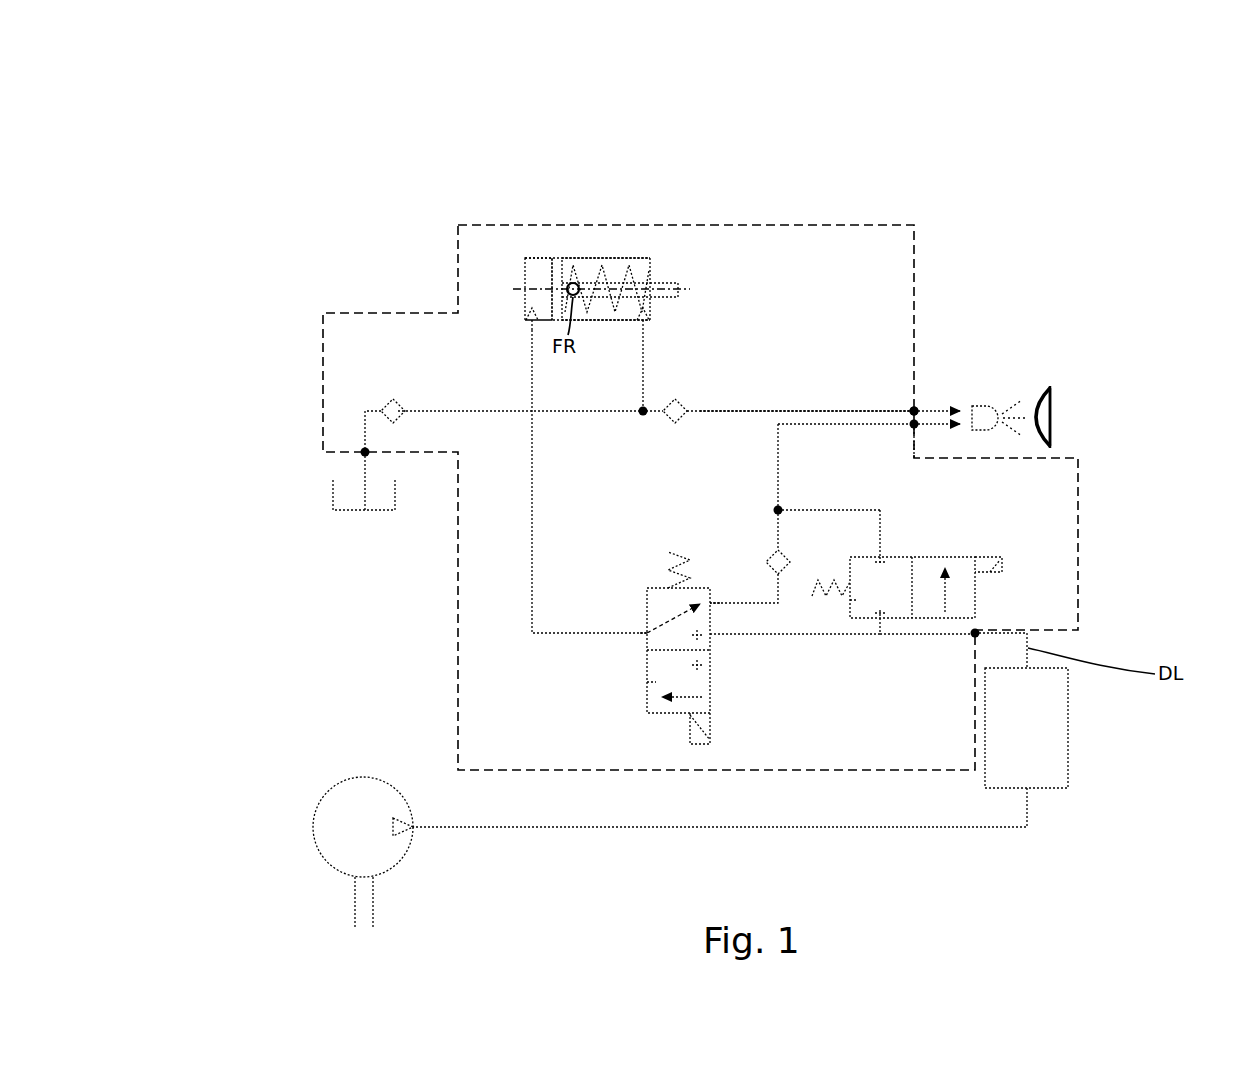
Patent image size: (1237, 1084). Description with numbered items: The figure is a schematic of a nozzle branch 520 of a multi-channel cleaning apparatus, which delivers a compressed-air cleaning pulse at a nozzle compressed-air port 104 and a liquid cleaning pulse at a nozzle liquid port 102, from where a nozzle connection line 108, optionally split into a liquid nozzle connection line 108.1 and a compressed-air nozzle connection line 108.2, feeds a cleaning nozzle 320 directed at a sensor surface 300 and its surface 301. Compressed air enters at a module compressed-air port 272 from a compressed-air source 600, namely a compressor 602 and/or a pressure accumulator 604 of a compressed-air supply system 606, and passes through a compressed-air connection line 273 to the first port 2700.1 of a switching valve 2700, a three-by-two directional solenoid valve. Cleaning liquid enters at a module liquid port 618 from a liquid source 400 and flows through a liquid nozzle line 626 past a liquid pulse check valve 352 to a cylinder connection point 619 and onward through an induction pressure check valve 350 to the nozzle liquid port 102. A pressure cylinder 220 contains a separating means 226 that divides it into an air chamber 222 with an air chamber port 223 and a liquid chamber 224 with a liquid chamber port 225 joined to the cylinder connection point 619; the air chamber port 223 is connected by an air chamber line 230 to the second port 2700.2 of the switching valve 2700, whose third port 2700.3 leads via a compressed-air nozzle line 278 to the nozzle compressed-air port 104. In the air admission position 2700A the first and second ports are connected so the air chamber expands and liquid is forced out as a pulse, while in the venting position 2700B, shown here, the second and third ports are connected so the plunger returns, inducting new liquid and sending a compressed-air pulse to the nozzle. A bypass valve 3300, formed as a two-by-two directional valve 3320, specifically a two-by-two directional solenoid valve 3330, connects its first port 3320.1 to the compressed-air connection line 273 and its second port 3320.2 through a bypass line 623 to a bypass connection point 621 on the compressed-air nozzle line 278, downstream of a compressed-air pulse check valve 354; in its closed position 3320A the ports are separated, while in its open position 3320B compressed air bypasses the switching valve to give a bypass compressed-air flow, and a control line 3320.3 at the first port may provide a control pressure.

The nozzle liquid port 102 is at (912, 407).
The nozzle compressed-air port 104 is at (913, 423).
The nozzle connection line 108 is at (932, 404).
The liquid nozzle connection line 108.1 is at (915, 408).
The compressed-air nozzle connection line 108.2 is at (950, 422).
The pressure cylinder 220 is at (547, 180).
The air chamber 222 is at (535, 265).
The air chamber port 223 is at (532, 324).
The liquid chamber 224 is at (561, 180).
The liquid chamber port 225 is at (643, 324).
The separating means 226 is at (555, 265).
The air chamber line 230 is at (531, 482).
The module compressed-air port 272 is at (978, 634).
The compressed-air connection line 273 is at (930, 635).
The compressed-air nozzle line 278 is at (864, 423).
The sensor surface 300 is at (1040, 393).
The windshield surface 301 is at (1052, 432).
The cleaning nozzle 320 is at (985, 405).
The induction pressure check valve 350 is at (681, 402).
The liquid pulse check valve 352 is at (398, 401).
The compressed-air pulse check valve 354 is at (781, 562).
The liquid source 400 is at (333, 494).
The nozzle branch 520 is at (906, 224).
The compressed-air source 600 is at (700, 798).
The compressor 602 is at (335, 827).
The pressure accumulator 604 is at (1053, 729).
The compressed-air supply system 606 is at (602, 838).
The module liquid port 618 is at (359, 453).
The cylinder connection point 619 is at (641, 414).
The bypass connection point 621 is at (777, 510).
The bypass line 623 is at (818, 504).
The liquid nozzle line 626 is at (811, 409).
The switching valve 2700 is at (653, 545).
The first port 2700.1 is at (718, 635).
The second port 2700.2 is at (647, 634).
The third port 2700.3 is at (711, 603).
The air admission position 2700A is at (658, 683).
The venting position 2700B is at (670, 604).
The bypass valve 3300 is at (878, 601).
The 2/2 directional valve 3320 is at (897, 606).
The first port 3320.1 is at (881, 621).
The second port 3320.2 is at (880, 556).
The control line 3320.3 is at (858, 622).
The closed position 3320A is at (855, 595).
The open position 3320B is at (962, 565).
The 2/2 directional solenoid valve 3330 is at (948, 538).